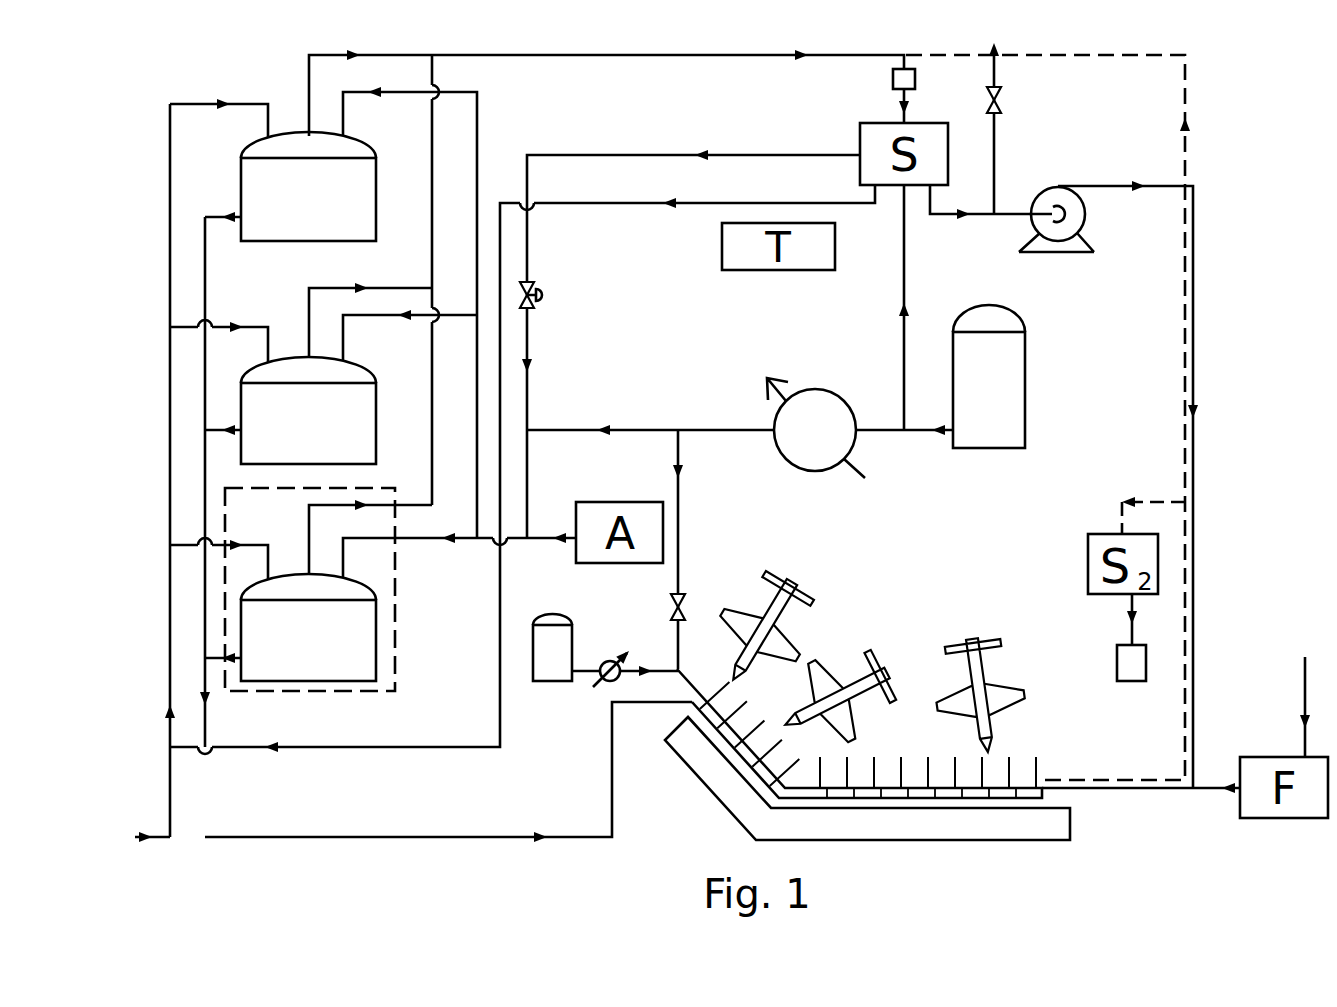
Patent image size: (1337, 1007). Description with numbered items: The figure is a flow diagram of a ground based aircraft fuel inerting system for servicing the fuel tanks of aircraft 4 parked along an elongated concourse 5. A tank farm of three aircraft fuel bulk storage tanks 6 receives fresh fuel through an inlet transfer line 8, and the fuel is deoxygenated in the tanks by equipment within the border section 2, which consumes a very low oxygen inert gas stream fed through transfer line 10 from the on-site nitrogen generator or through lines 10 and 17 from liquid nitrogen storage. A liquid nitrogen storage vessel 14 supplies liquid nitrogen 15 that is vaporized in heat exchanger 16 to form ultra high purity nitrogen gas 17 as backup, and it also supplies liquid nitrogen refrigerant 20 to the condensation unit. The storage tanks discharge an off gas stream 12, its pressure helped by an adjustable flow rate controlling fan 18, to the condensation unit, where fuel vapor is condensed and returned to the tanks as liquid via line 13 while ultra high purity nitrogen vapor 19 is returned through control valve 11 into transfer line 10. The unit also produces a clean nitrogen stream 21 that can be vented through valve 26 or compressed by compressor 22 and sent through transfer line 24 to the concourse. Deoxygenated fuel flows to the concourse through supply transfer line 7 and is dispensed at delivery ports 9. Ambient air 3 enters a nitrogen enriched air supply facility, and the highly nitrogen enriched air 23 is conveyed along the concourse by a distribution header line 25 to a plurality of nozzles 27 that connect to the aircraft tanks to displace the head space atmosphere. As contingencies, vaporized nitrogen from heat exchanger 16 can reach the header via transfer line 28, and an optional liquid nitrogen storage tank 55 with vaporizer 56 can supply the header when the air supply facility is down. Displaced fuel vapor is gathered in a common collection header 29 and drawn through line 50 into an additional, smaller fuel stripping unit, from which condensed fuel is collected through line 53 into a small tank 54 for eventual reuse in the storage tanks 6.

The border section 2 is at (396, 663).
The ambient air 3 is at (1305, 697).
The aircraft 4 is at (786, 577).
The concourse 5 is at (700, 778).
The aircraft fuel bulk storage tanks 6 is at (377, 229).
The supply transfer line 7 is at (575, 835).
The inlet transfer line 8 is at (172, 826).
The delivery ports 9 is at (1045, 796).
The inert gas stream transfer line 10 is at (510, 540).
The control valve 11 is at (540, 297).
The off gas stream 12 is at (578, 58).
The recovered fuel return line 13 is at (697, 205).
The liquid nitrogen storage vessel 14 is at (1010, 449).
The liquid nitrogen 15 is at (879, 433).
The heat exchanger 16 is at (835, 390).
The ultra high purity nitrogen gas 17 is at (660, 430).
The adjustable flow rate controlling fan 18 is at (893, 82).
The ultra high purity nitrogen vapor line 19 is at (785, 153).
The liquid nitrogen refrigerant 20 is at (903, 220).
The clean nitrogen stream 21 is at (945, 218).
The compressor 22 is at (1032, 188).
The highly nitrogen enriched air 23 is at (1212, 792).
The transfer line 24 is at (1195, 613).
The distribution header line 25 is at (1020, 783).
The valve 26 is at (1003, 120).
The nozzles 27 is at (980, 766).
The transfer line 28 is at (680, 512).
The collection header 29 is at (1075, 780).
The line 50 is at (1152, 501).
The line 53 is at (1130, 636).
The small tank 54 is at (1117, 679).
The liquid nitrogen storage tank 55 is at (533, 637).
The vaporizer 56 is at (600, 662).